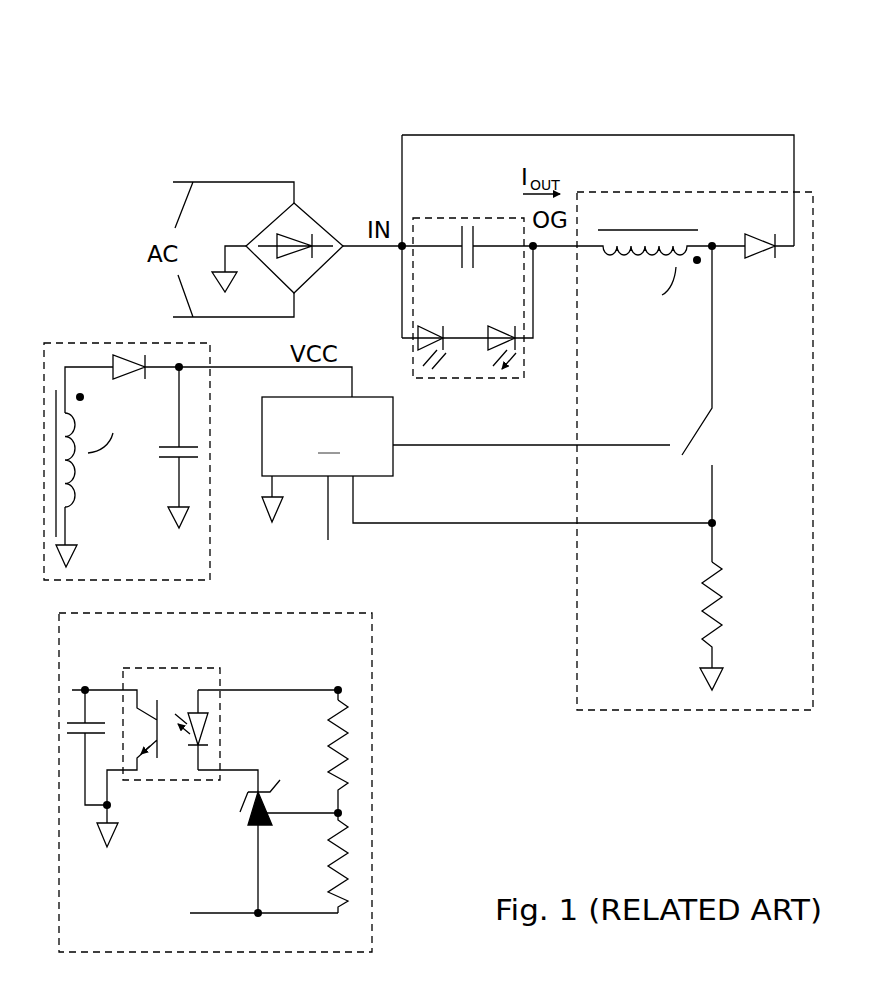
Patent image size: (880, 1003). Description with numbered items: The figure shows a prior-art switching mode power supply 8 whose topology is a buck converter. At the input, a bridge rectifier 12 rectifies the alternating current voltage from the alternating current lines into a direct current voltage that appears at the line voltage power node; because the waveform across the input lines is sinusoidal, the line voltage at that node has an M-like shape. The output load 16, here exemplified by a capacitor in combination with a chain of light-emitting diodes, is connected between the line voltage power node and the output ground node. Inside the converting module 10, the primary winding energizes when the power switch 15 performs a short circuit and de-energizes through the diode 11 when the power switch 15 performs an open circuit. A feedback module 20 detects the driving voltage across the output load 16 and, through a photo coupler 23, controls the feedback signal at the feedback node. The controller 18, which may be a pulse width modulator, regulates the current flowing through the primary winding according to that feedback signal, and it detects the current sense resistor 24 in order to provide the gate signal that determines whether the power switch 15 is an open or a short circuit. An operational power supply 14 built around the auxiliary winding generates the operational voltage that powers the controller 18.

The switching mode power supply 8 is at (362, 53).
The converting module 10 is at (633, 192).
The diode 11 is at (759, 255).
The bridge rectifier 12 is at (318, 223).
The operational power supply 14 is at (62, 343).
The power switch 15 is at (713, 438).
The output load 16 is at (482, 378).
The controller 18 is at (329, 469).
The feedback module 20 is at (263, 613).
The photo coupler 23 is at (140, 668).
The current sense resistor 24 is at (703, 607).